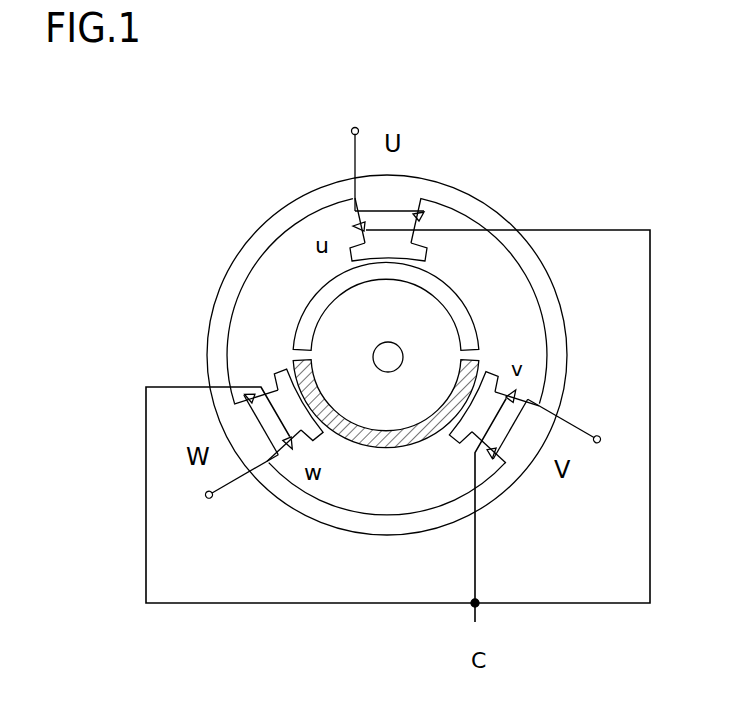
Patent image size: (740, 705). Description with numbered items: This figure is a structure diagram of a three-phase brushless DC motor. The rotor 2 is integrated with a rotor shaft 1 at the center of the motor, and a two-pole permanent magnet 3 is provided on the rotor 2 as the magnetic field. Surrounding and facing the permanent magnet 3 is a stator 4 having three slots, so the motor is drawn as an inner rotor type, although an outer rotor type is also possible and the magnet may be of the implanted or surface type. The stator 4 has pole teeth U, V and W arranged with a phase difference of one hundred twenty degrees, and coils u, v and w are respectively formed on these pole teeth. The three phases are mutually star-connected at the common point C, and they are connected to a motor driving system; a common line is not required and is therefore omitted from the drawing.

The rotor shaft 1 is at (374, 353).
The rotor 2 is at (297, 302).
The permanent magnet 3 is at (480, 323).
The stator 4 is at (497, 205).